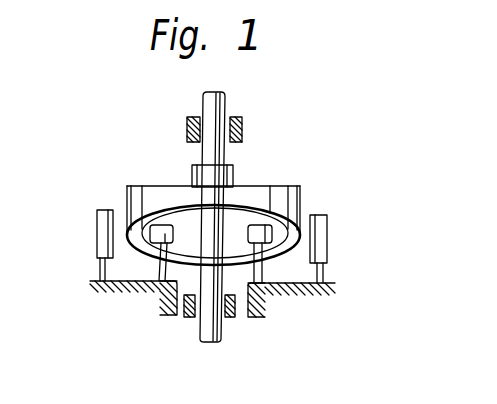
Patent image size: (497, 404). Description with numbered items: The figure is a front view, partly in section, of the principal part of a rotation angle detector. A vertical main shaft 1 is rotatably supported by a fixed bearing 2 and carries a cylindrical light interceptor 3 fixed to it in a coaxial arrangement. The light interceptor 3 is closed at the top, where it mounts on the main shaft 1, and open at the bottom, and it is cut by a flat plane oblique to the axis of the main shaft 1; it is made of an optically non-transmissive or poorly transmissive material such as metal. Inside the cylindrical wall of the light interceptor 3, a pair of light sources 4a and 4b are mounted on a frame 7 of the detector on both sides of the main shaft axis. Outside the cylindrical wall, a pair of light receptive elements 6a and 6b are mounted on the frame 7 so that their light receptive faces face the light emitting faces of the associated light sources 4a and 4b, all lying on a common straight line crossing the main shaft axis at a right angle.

The main shaft 1 is at (226, 96).
The fixed bearing 2 is at (243, 132).
The light interceptor 3 is at (301, 188).
The light source 4a is at (162, 258).
The light source 4b is at (259, 262).
The light receptive element 6a is at (97, 247).
The light receptive element 6b is at (327, 249).
The frame 7 is at (165, 307).